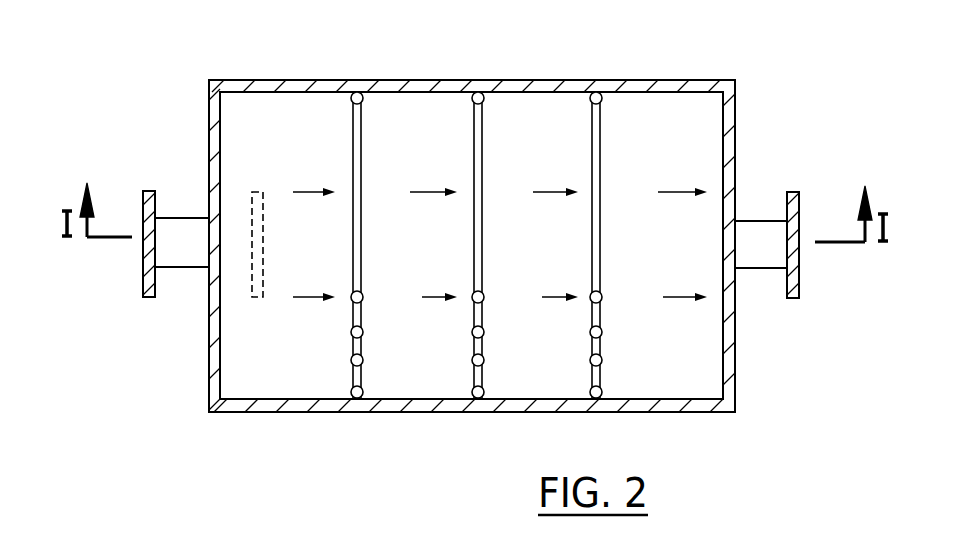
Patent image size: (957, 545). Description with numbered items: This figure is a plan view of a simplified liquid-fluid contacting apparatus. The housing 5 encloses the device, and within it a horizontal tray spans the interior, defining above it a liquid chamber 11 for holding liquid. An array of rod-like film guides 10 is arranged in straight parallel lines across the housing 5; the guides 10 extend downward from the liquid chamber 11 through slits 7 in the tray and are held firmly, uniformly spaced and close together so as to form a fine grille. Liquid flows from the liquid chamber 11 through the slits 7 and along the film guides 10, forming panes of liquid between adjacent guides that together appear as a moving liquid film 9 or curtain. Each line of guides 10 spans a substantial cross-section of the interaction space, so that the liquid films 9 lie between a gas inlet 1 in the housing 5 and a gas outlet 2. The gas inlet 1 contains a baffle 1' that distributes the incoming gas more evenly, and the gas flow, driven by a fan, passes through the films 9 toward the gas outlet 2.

The gas inlet 1 is at (139, 244).
The baffle 1' is at (211, 212).
The gas outlet 2 is at (810, 264).
The housing 5 is at (347, 412).
The slits 7 is at (362, 160).
The liquid film 9 is at (378, 236).
The film guides 10 is at (351, 358).
The liquid chamber 11 is at (318, 157).